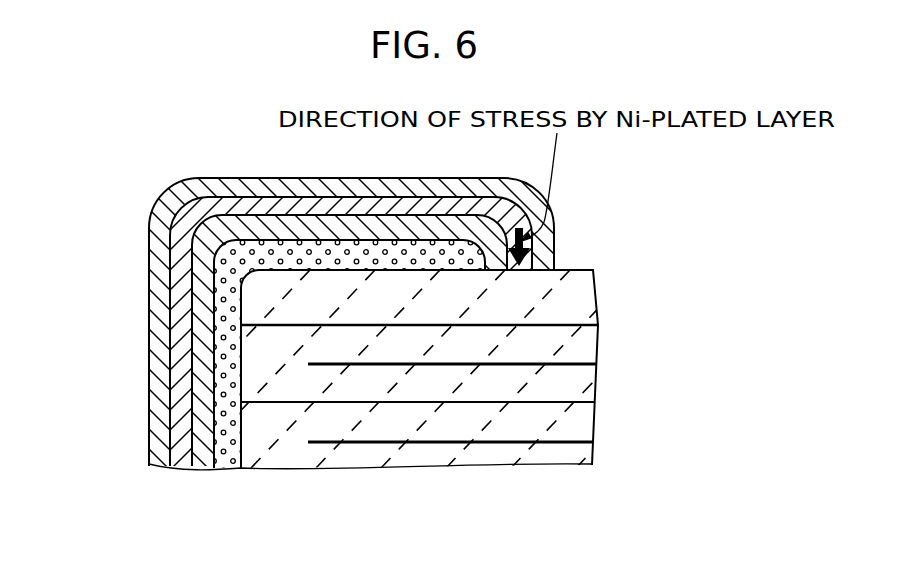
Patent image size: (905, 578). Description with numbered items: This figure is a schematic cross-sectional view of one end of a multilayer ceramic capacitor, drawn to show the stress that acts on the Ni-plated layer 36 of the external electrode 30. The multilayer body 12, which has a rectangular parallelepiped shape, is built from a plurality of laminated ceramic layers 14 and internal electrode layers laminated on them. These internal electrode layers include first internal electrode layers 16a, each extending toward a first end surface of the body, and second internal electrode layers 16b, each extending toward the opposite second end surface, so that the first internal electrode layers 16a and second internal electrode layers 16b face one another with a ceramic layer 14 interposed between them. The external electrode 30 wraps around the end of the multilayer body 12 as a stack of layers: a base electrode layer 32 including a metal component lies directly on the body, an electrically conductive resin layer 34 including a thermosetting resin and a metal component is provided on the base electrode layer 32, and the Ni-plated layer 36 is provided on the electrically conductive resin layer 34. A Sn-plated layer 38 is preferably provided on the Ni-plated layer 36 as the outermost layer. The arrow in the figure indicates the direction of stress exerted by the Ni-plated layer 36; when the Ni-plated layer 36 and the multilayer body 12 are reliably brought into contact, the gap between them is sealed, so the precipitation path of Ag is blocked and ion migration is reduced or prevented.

The multilayer body 12 is at (578, 268).
The ceramic layer 14 is at (568, 382).
The first internal electrode layer 16a is at (575, 324).
The second internal electrode layer 16b is at (556, 365).
The external electrode 30 is at (180, 188).
The base electrode layer 32 is at (230, 447).
The electrically conductive resin layer 34 is at (197, 370).
The Ni-plated layer 36 is at (177, 318).
The Sn-plated layer 38 is at (160, 270).